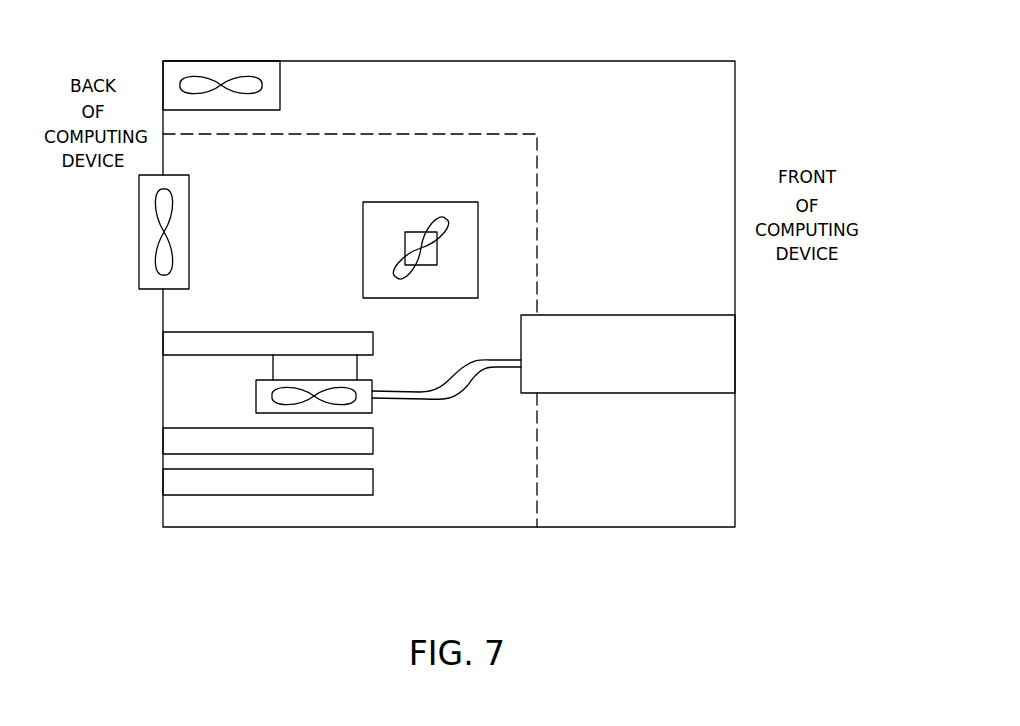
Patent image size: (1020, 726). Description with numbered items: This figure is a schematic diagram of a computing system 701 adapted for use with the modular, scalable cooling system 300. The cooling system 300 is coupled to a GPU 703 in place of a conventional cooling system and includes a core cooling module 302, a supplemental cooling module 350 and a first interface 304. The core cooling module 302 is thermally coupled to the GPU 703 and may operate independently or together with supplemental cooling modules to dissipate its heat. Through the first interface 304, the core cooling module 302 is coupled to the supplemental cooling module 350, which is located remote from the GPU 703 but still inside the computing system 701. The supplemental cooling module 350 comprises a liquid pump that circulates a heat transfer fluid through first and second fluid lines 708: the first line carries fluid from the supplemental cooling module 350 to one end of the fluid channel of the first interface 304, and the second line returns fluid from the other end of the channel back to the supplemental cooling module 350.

The computing system 701 is at (620, 61).
The modular, scalable cooling system 300 is at (449, 405).
The core cooling module 302 is at (267, 403).
The first interface 304 is at (372, 383).
The supplemental cooling module 350 is at (640, 361).
The GPU 703 is at (333, 377).
The fluid lines 708 is at (435, 392).